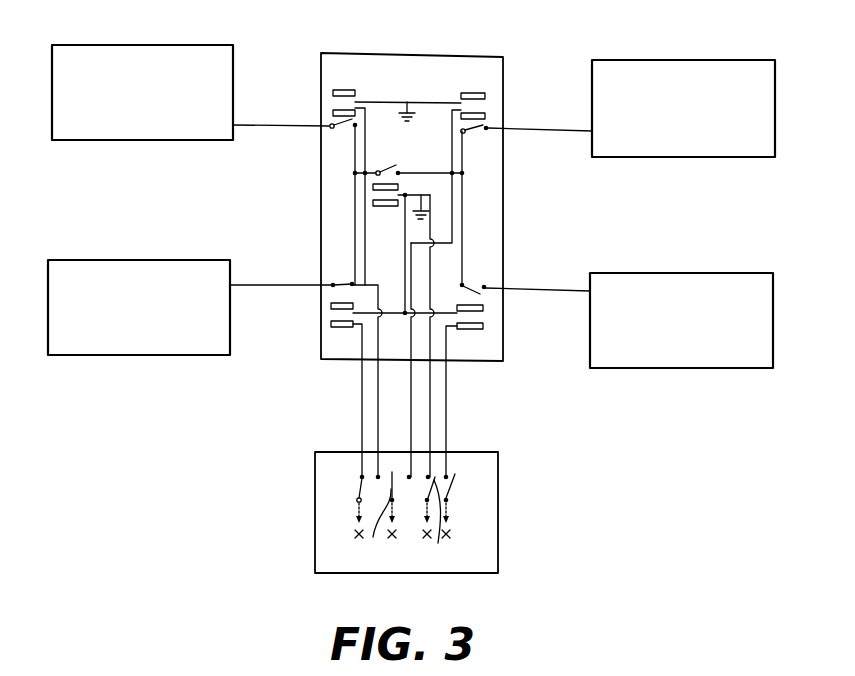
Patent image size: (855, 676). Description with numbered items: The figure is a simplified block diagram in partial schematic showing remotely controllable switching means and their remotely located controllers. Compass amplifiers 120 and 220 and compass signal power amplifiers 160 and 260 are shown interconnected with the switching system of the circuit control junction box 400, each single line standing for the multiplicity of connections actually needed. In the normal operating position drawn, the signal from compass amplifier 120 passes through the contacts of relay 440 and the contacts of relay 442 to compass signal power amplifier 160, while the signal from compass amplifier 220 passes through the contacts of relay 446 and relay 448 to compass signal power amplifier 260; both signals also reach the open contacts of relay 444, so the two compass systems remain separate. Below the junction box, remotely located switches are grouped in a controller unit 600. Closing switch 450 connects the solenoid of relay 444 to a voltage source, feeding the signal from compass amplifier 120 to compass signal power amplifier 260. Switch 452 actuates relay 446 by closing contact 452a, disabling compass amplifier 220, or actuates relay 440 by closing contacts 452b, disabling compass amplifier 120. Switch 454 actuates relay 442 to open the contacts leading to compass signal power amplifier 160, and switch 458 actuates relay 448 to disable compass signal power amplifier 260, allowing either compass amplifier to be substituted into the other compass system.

The compass amplifier 120 is at (150, 95).
The compass signal power amplifier 160 is at (140, 308).
The compass amplifier 220 is at (694, 106).
The compass signal power amplifier 260 is at (698, 322).
The circuit control junction box 400 is at (485, 53).
The relay 440 is at (342, 89).
The relay 442 is at (352, 329).
The relay 444 is at (391, 167).
The relay 446 is at (467, 93).
The relay 448 is at (478, 333).
The switch 450 is at (442, 521).
The switch 452 is at (357, 532).
The contact 452a is at (409, 470).
The contacts 452b is at (379, 470).
The switch 454 is at (356, 488).
The switch 458 is at (450, 490).
The control unit 600 is at (413, 562).